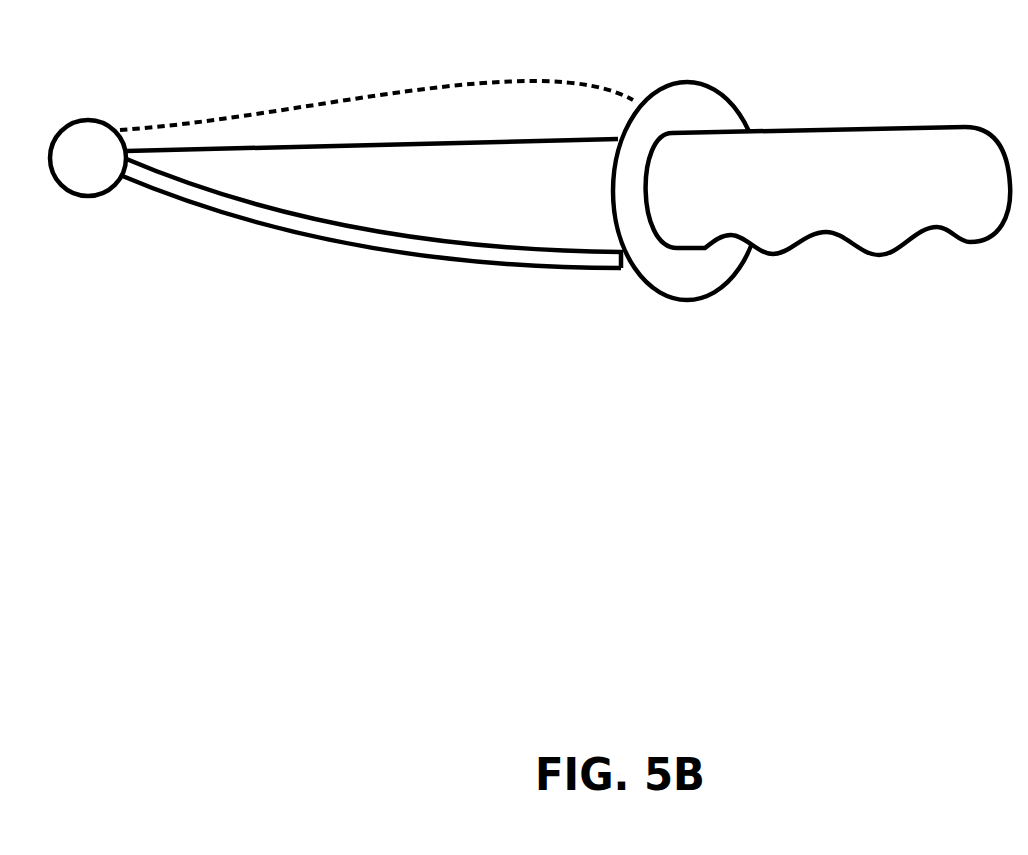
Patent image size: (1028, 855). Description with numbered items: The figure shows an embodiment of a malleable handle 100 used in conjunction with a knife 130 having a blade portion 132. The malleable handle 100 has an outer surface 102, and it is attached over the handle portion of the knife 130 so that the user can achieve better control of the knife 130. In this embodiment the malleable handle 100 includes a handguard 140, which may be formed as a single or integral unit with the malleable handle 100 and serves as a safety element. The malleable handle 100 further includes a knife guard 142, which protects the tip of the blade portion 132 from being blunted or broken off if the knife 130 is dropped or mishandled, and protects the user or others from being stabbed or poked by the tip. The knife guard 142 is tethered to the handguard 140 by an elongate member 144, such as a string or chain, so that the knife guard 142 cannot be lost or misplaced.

The malleable handle 100 is at (912, 108).
The outer surface 102 is at (832, 201).
The knife 130 is at (421, 280).
The blade portion 132 is at (370, 232).
The handguard 140 is at (668, 122).
The knife guard 142 is at (68, 169).
The dotted blade edge 144 is at (531, 70).